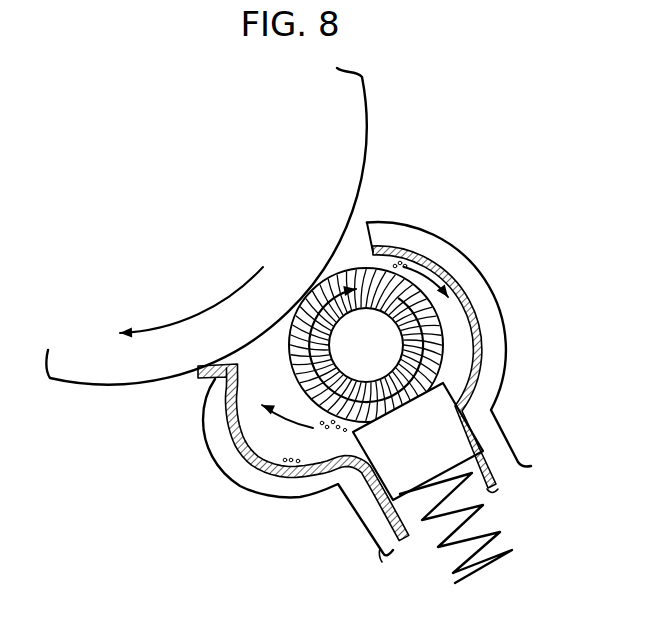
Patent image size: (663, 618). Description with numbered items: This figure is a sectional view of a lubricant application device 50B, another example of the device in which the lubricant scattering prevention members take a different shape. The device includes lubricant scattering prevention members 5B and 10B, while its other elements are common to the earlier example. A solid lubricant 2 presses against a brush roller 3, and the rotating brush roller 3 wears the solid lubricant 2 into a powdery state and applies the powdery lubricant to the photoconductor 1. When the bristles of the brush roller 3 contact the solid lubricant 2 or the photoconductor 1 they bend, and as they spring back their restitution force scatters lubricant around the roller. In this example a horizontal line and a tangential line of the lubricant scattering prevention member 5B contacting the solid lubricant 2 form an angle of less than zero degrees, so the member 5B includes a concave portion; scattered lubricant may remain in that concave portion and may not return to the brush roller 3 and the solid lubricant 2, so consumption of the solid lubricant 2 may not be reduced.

The photoconductor 1 is at (205, 224).
The solid lubricant 2 is at (464, 432).
The brush roller 3 is at (291, 350).
The lubricant scattering prevention member 5B is at (257, 485).
The lubricant scattering prevention member 10B is at (487, 281).
The lubricant application device 50B is at (497, 141).